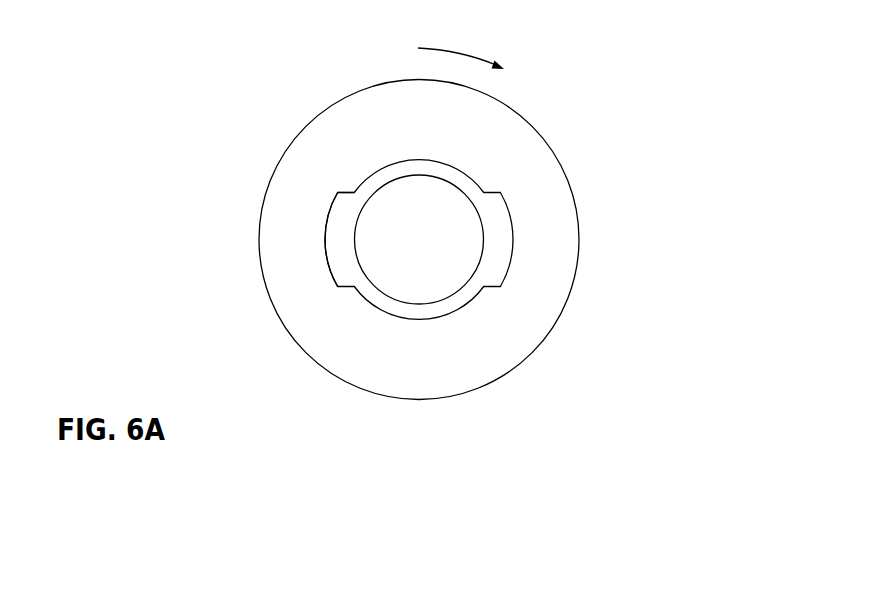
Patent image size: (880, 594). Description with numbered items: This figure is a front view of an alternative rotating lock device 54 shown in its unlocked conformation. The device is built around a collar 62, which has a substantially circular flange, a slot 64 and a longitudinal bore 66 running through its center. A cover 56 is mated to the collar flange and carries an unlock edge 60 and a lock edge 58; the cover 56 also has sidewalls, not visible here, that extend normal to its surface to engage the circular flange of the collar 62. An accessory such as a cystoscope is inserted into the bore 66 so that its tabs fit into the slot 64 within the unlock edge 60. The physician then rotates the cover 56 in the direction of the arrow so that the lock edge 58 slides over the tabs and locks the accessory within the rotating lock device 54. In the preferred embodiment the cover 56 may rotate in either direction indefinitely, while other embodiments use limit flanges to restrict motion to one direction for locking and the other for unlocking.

The rotating lock device 54 is at (690, 97).
The cover 56 is at (563, 230).
The lock edge 58 is at (370, 308).
The unlock edge 60 is at (324, 241).
The collar 62 is at (387, 177).
The slot 64 is at (340, 205).
The longitudinal bore 66 is at (445, 283).